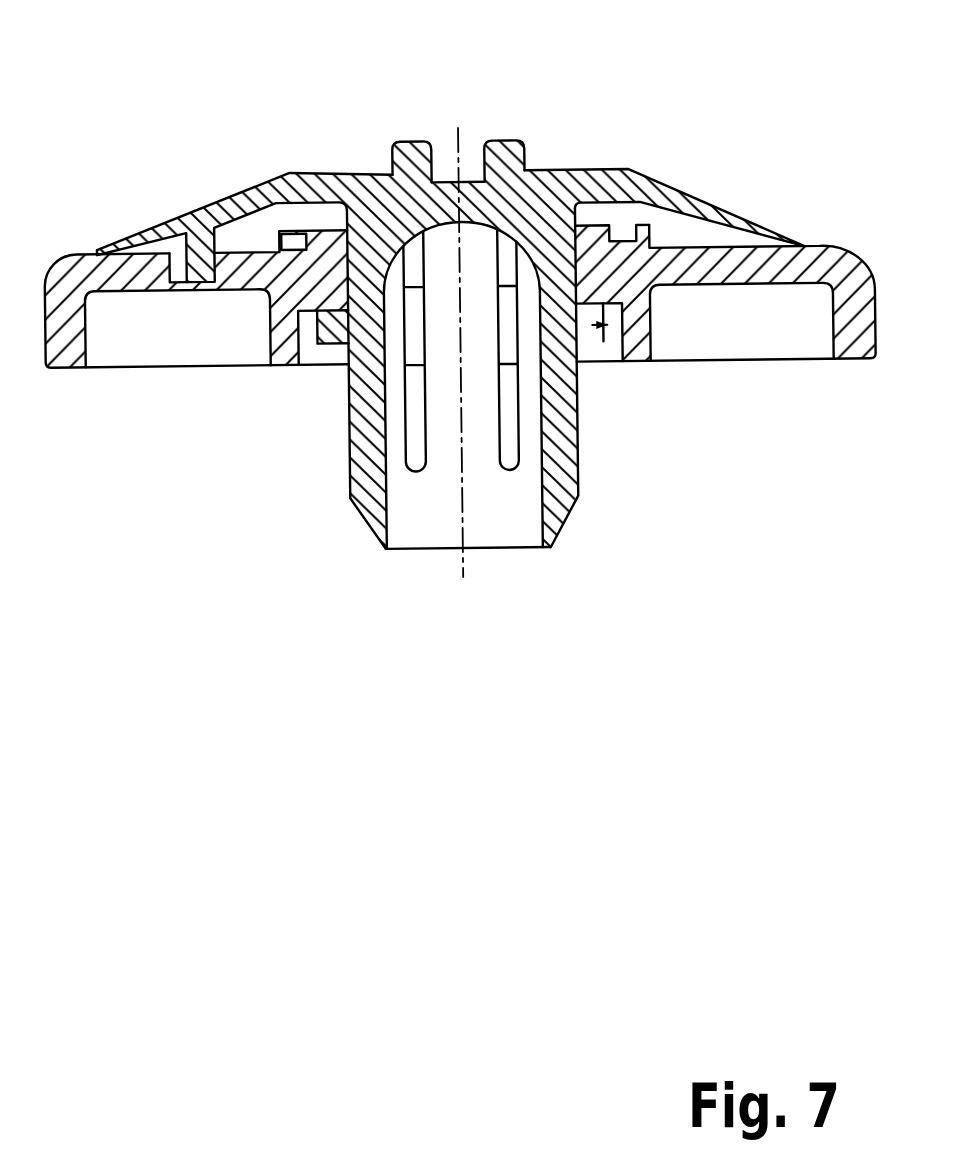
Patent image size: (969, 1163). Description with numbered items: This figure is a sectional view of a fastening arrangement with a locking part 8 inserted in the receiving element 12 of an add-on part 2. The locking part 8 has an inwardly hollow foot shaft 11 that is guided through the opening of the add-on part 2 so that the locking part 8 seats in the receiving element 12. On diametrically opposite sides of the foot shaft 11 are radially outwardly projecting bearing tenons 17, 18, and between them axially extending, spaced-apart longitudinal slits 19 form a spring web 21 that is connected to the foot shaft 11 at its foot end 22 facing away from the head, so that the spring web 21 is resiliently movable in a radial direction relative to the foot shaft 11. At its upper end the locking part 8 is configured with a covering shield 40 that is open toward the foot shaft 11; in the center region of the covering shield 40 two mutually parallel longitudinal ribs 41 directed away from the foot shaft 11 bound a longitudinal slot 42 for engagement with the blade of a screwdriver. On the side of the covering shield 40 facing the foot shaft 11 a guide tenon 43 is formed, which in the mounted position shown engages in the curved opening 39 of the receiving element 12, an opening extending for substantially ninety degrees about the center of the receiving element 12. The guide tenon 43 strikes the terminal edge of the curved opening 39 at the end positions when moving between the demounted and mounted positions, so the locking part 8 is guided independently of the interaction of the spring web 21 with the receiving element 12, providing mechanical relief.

The add-on part 2 is at (813, 267).
The locking part 8 is at (676, 178).
The foot shaft 11 is at (575, 469).
The receiving element 12 is at (257, 314).
The bearing tenon 17 is at (317, 326).
The bearing tenon 18 is at (623, 312).
The longitudinal slits 19 is at (418, 432).
The spring web 21 is at (446, 385).
The foot end 22 is at (492, 563).
The curved opening 39 is at (172, 279).
The covering shield 40 is at (264, 183).
The longitudinal ribs 41 is at (415, 142).
The longitudinal slot 42 is at (447, 162).
The guide tenon 43 is at (196, 277).